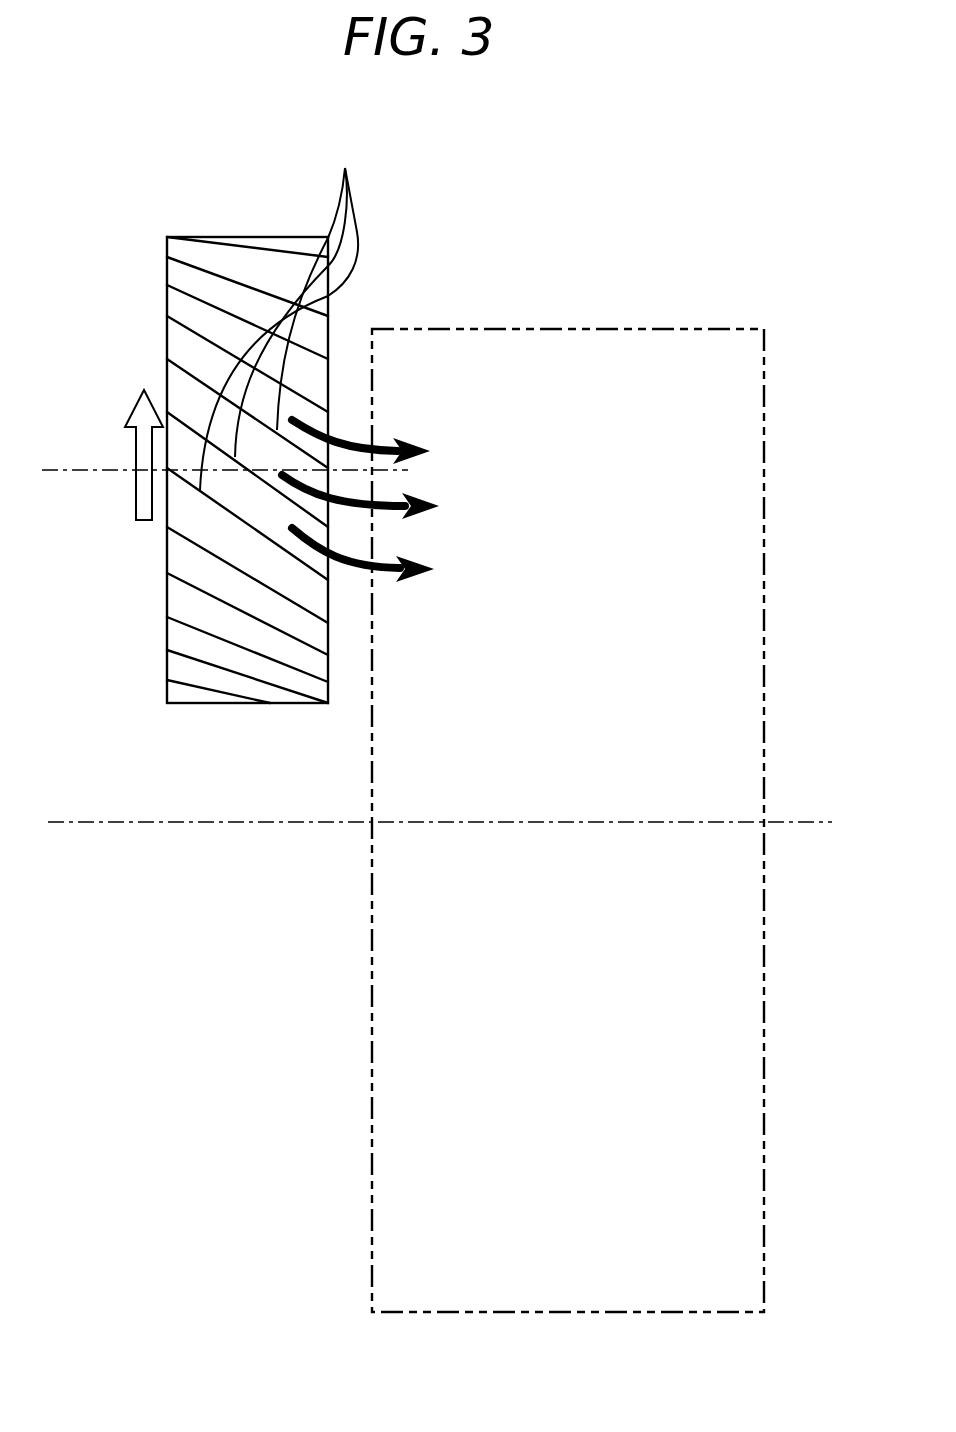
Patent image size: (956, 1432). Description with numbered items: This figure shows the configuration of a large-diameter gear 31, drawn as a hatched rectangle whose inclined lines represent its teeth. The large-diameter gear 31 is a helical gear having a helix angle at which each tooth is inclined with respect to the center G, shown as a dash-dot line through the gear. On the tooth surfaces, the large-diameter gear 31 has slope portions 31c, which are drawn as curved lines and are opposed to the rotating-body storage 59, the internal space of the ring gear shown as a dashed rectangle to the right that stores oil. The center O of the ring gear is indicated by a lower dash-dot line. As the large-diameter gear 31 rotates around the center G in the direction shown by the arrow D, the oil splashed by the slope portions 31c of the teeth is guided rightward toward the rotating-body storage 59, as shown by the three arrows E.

The large-diameter gear 31 is at (265, 237).
The slope portions 31c is at (288, 315).
The rotating-body storage 59 is at (615, 329).
The arrows E is at (382, 450).
The center G is at (100, 470).
The arrow D is at (136, 485).
The center O is at (108, 822).